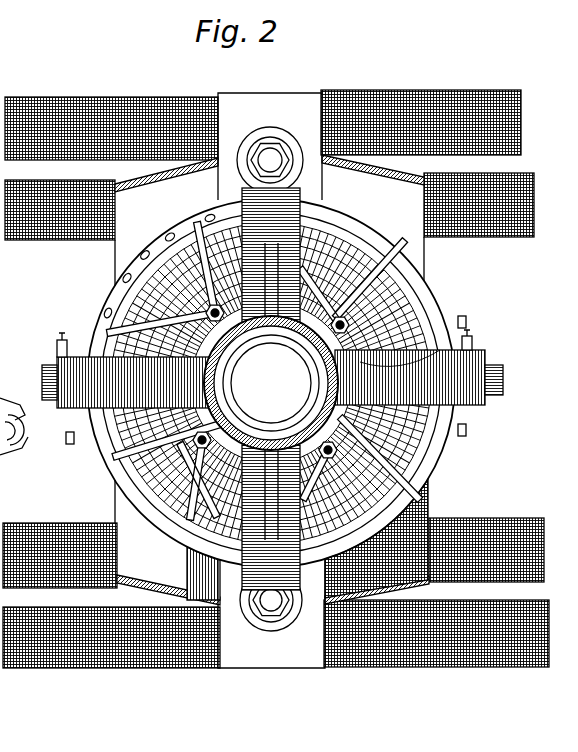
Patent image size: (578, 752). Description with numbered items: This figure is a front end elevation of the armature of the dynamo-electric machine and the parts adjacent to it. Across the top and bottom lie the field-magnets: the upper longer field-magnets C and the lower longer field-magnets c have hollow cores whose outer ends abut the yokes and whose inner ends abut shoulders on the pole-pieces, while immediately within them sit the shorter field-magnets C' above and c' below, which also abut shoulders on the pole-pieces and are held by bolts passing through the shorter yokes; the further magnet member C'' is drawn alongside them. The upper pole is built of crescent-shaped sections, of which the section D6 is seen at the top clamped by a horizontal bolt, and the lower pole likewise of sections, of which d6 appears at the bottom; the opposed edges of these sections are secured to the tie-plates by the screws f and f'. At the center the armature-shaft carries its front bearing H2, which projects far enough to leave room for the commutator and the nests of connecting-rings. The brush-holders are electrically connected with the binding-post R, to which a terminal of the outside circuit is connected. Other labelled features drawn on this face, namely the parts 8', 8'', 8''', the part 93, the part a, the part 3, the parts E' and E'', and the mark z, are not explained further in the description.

The longer field-magnet C is at (111, 117).
The shorter field-magnet C' is at (421, 112).
The second frame beams C'' is at (269, 216).
The shorter field-magnet c' is at (273, 545).
The longer field-magnet c is at (276, 628).
The upper pole section D6 is at (270, 146).
The lower pole section d6 is at (271, 614).
The outer field coil row 8' is at (271, 383).
The middle field coil row 8'' is at (271, 383).
The inner field coil row 8''' is at (271, 383).
The rim holes 93 is at (271, 383).
The strut a is at (352, 230).
The clamping nuts 3 is at (271, 381).
The left arm E' is at (126, 393).
The right arm E'' is at (418, 370).
The binding-post R is at (500, 376).
The screw f is at (64, 388).
The screw f' is at (472, 379).
The front bearing H2 is at (271, 383).
The section line z is at (18, 434).